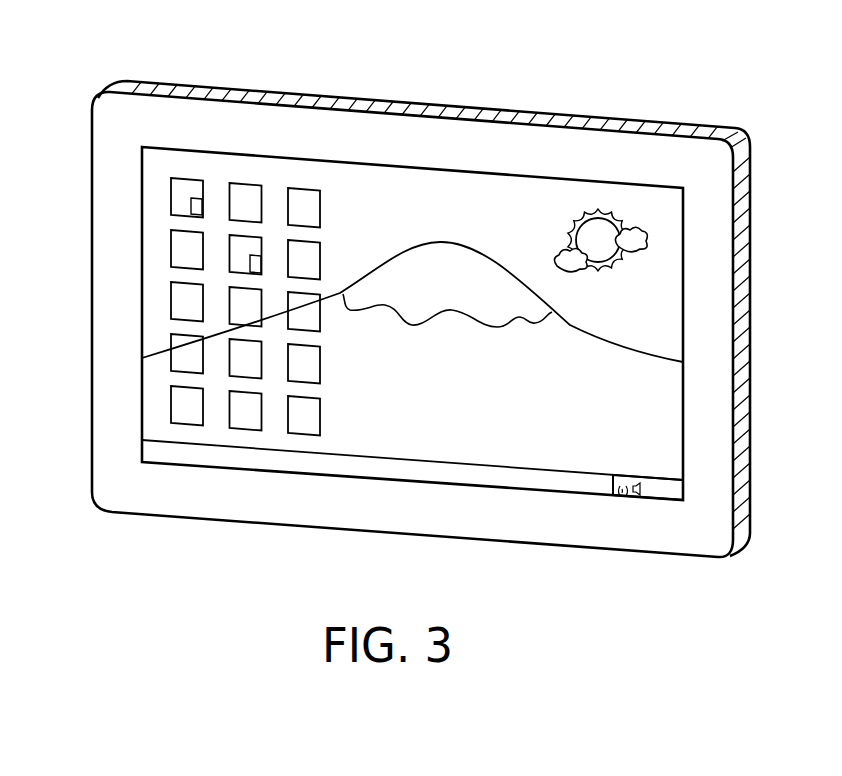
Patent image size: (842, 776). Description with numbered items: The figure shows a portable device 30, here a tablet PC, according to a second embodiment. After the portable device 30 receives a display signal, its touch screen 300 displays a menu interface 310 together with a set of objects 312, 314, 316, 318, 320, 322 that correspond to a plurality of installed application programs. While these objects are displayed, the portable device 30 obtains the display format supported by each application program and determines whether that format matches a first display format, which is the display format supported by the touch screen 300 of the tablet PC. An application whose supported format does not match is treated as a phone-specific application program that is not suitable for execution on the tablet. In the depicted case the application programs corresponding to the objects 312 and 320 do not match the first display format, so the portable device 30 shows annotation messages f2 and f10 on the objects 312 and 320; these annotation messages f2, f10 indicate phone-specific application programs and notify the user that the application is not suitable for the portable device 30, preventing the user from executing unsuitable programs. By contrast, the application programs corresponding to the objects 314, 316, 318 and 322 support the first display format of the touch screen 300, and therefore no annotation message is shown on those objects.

The portable device 30 is at (309, 530).
The touch screen 300 is at (632, 183).
The menu interface 310 is at (525, 207).
The object 312 is at (188, 185).
The object 314 is at (247, 190).
The object 316 is at (305, 195).
The object 318 is at (180, 244).
The object 320 is at (235, 252).
The object 322 is at (318, 258).
The annotation message f2 is at (191, 206).
The annotation message f10 is at (250, 265).